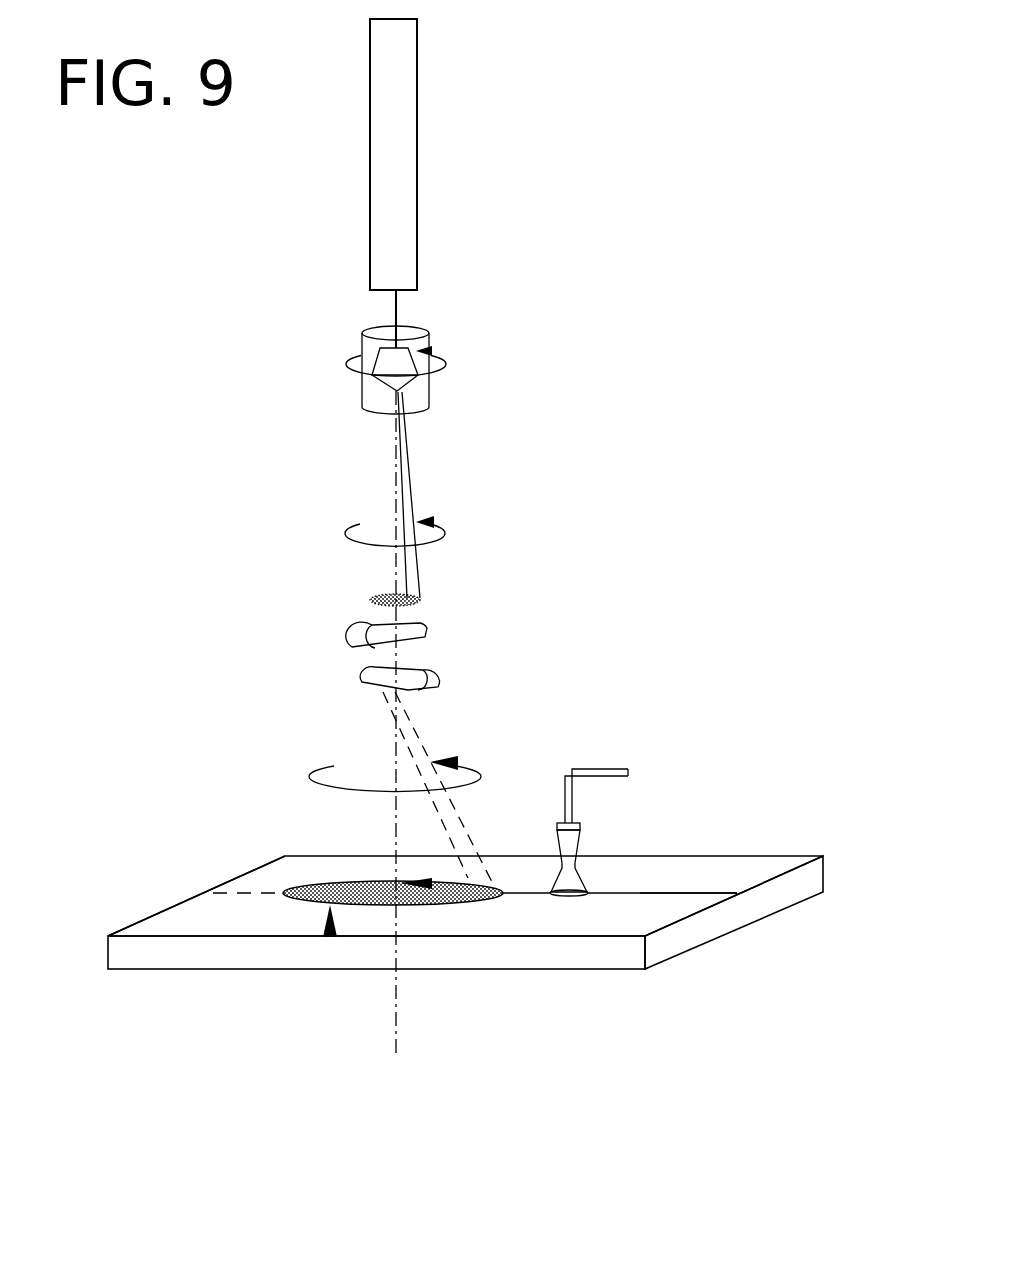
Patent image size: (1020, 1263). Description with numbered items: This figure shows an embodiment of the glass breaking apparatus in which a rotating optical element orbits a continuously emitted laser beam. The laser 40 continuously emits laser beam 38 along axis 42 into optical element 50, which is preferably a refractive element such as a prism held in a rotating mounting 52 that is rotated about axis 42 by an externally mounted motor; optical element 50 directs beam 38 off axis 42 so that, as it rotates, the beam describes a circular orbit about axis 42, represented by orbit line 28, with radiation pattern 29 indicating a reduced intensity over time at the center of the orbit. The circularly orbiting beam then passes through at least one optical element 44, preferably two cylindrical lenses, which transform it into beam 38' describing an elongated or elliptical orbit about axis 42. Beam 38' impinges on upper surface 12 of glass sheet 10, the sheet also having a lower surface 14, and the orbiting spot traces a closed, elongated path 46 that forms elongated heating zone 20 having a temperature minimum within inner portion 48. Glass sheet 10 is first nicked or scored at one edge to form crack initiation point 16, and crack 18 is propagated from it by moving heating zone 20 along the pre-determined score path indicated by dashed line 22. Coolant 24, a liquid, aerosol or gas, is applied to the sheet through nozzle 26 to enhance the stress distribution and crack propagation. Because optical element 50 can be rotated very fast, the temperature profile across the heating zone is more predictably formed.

The glass sheet 10 is at (825, 877).
The upper major surface 12 is at (187, 923).
The lower major surface 14 is at (520, 969).
The crack initiation point 16 is at (743, 902).
The crack 18 is at (720, 893).
The heating zone 20 is at (330, 937).
The dashed line 22 is at (235, 893).
The coolant 24 is at (580, 877).
The nozzle 26 is at (580, 843).
The orbit line 28 is at (568, 897).
The radiation pattern 29 is at (373, 600).
The laser beam 38 is at (467, 315).
The orbiting beam 38' is at (491, 787).
The laser 40 is at (417, 147).
The axis 42 is at (392, 983).
The optical element 44 is at (412, 642).
The elongated closed path 46 is at (328, 882).
The inner portion 48 is at (405, 900).
The optical element 50 is at (430, 395).
The rotating prism housing 52 is at (358, 346).